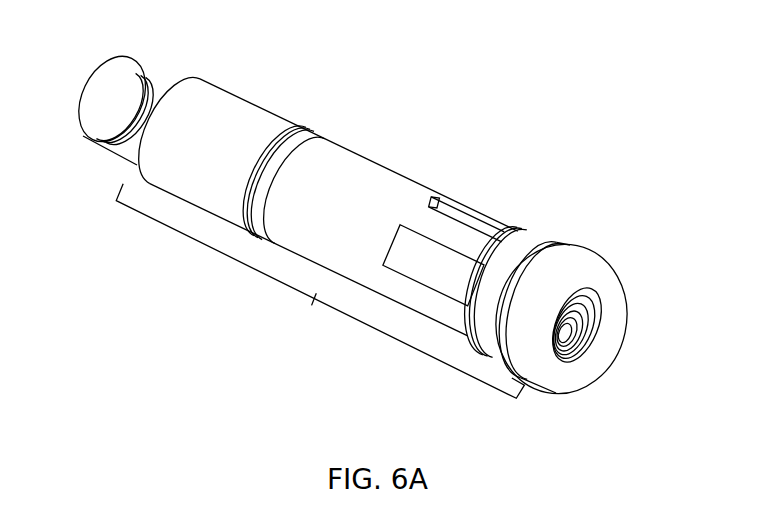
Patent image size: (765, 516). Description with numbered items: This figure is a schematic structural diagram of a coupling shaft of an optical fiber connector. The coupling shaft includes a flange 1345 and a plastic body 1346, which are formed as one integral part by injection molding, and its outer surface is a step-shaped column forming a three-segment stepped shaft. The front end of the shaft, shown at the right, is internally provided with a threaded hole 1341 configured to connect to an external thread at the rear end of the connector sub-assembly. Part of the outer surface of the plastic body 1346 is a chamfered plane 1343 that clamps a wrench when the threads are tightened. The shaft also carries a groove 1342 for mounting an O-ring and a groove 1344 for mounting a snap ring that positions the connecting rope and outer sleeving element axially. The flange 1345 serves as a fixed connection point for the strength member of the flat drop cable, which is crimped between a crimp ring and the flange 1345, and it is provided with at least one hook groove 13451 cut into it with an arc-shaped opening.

The threaded hole 1341 is at (599, 332).
The groove 1342 is at (568, 233).
The chamfered plane 1343 is at (483, 198).
The groove 1344 is at (312, 124).
The flange 1345 is at (100, 78).
The hook groove 13451 is at (153, 76).
The plastic body 1346 is at (319, 294).